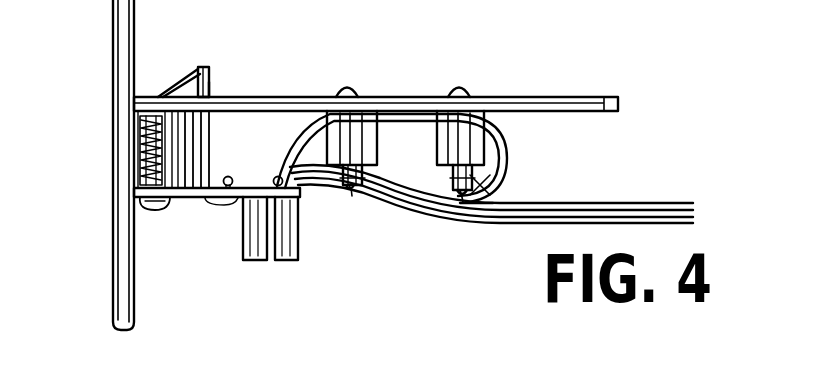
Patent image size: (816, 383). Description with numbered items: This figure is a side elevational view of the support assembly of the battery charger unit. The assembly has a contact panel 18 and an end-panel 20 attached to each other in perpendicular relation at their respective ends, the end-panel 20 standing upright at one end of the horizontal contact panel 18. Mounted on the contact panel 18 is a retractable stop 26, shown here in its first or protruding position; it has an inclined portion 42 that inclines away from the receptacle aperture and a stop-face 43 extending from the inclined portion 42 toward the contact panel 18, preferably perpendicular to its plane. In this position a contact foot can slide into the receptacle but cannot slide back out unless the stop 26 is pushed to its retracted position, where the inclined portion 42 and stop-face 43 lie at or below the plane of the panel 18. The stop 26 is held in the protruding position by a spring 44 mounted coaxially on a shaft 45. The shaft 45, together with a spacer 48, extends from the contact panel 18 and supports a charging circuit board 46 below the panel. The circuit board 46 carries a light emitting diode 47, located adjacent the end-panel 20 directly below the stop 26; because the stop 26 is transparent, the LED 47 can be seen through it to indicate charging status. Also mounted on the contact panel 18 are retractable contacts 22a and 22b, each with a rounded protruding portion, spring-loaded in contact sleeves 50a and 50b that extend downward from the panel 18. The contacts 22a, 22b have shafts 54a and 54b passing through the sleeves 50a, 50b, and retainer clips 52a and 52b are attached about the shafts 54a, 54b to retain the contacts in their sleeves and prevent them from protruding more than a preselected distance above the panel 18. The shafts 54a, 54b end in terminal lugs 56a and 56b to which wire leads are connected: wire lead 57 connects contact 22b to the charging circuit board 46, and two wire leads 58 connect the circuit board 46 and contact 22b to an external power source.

The contact panel 18 is at (566, 97).
The end-panel 20 is at (115, 276).
The retractable contact 22a is at (346, 84).
The retractable contact 22b is at (456, 84).
The retractable stop 26 is at (206, 74).
The inclined portion 42 is at (185, 80).
The stop-face 43 is at (213, 86).
The spring 44 is at (147, 150).
The shaft 45 is at (147, 165).
The charging circuit board 46 is at (300, 203).
The light emitting diode 47 is at (168, 205).
The spacer 48 is at (207, 137).
The contact sleeve 50a is at (376, 138).
The contact sleeve 50b is at (490, 143).
The retainer clip 52a is at (364, 172).
The retainer clip 52b is at (507, 178).
The shaft 54a is at (380, 190).
The shaft 54b is at (484, 195).
The terminal lug 56a is at (347, 202).
The terminal lug 56b is at (458, 205).
The wire lead 57 is at (498, 128).
The wire leads 58 is at (699, 234).